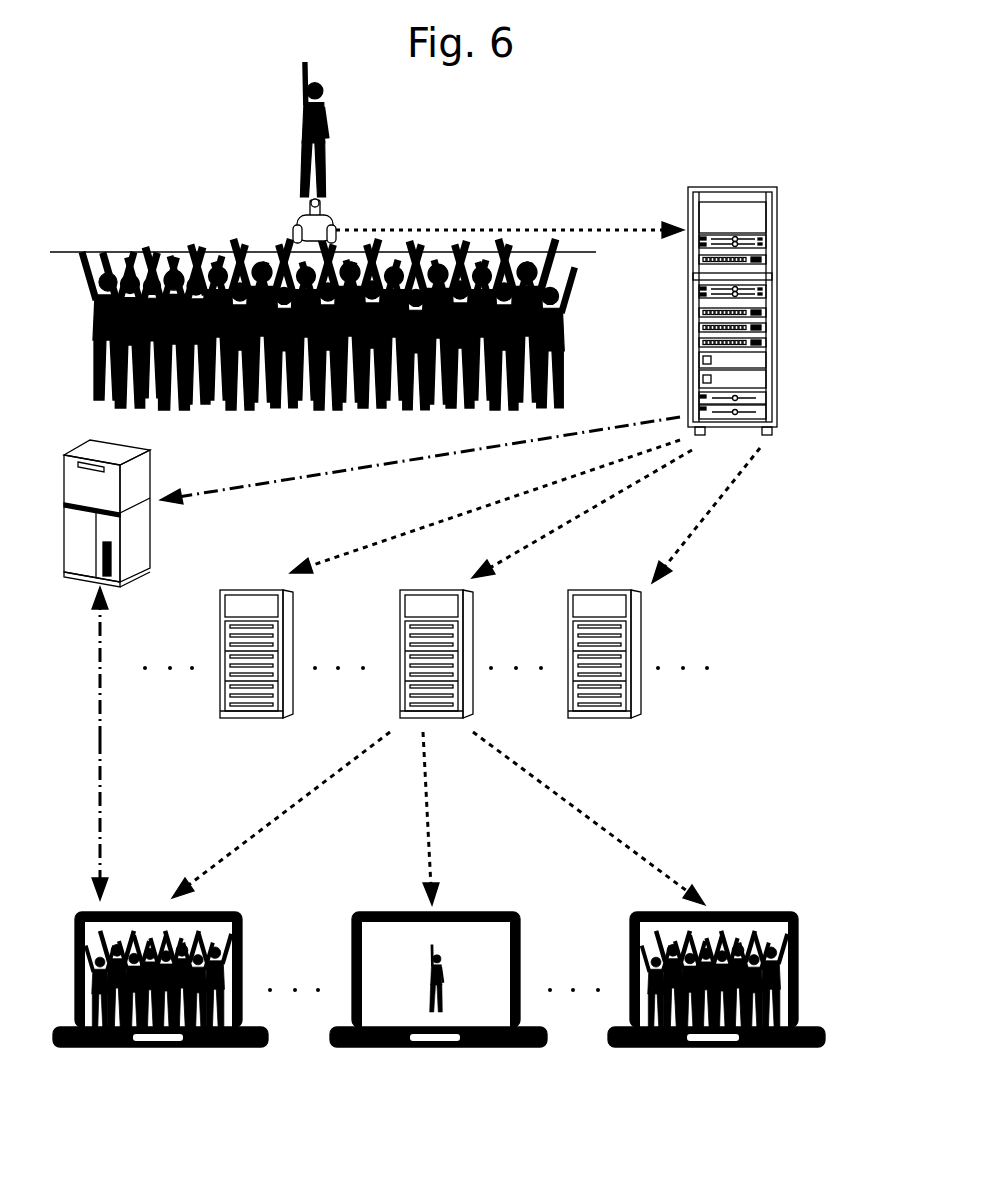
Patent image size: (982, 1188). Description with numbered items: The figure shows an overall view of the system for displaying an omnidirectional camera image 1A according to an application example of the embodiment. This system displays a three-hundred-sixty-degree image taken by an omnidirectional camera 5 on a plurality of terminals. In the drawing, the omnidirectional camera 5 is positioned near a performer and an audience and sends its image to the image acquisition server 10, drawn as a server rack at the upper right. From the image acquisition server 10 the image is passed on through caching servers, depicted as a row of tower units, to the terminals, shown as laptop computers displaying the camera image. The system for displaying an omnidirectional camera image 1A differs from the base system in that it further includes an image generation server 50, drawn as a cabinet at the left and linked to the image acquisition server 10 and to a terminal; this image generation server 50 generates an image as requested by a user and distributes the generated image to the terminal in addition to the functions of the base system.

The omnidirectional camera 5 is at (297, 228).
The image acquisition server 10 is at (778, 236).
The image generation server 50 is at (153, 452).
The system for displaying an omnidirectional camera image 1A is at (237, 542).